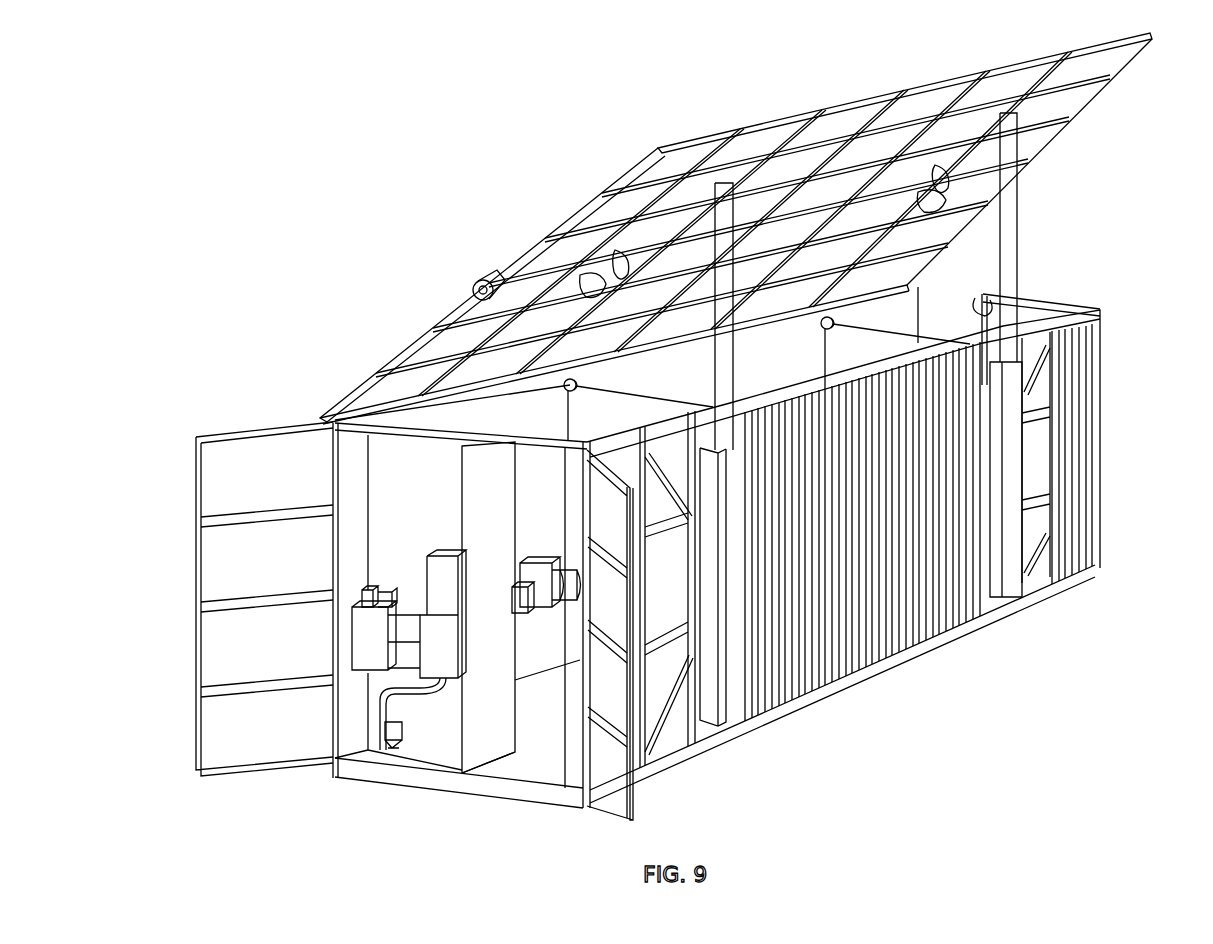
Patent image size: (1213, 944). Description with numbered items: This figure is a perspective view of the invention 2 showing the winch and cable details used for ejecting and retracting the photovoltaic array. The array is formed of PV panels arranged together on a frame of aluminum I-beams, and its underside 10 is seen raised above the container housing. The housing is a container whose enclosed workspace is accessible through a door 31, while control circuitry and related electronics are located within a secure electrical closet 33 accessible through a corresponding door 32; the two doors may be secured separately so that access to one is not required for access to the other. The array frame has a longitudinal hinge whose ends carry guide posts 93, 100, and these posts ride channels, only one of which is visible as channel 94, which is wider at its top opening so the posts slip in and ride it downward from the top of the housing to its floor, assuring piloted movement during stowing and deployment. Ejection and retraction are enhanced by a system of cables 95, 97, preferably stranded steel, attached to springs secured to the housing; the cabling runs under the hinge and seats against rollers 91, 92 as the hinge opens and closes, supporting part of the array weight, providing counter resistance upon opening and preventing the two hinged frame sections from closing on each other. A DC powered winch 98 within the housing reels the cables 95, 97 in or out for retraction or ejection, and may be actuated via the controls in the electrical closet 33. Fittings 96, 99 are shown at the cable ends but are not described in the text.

The solar power system 2 is at (468, 108).
The underside of the PV array 10 is at (1116, 75).
The door 31 is at (618, 788).
The door 32 is at (252, 740).
The electrical closet 33 is at (430, 740).
The roller 91 is at (617, 258).
The roller 92 is at (940, 195).
The guide post 93 is at (1040, 162).
The channel 94 is at (980, 308).
The cable 95 is at (890, 333).
The light fixture 96 is at (822, 327).
The cable 97 is at (634, 394).
The winch 98 is at (547, 603).
The light fixture 99 is at (565, 389).
The guide post 100 is at (473, 292).